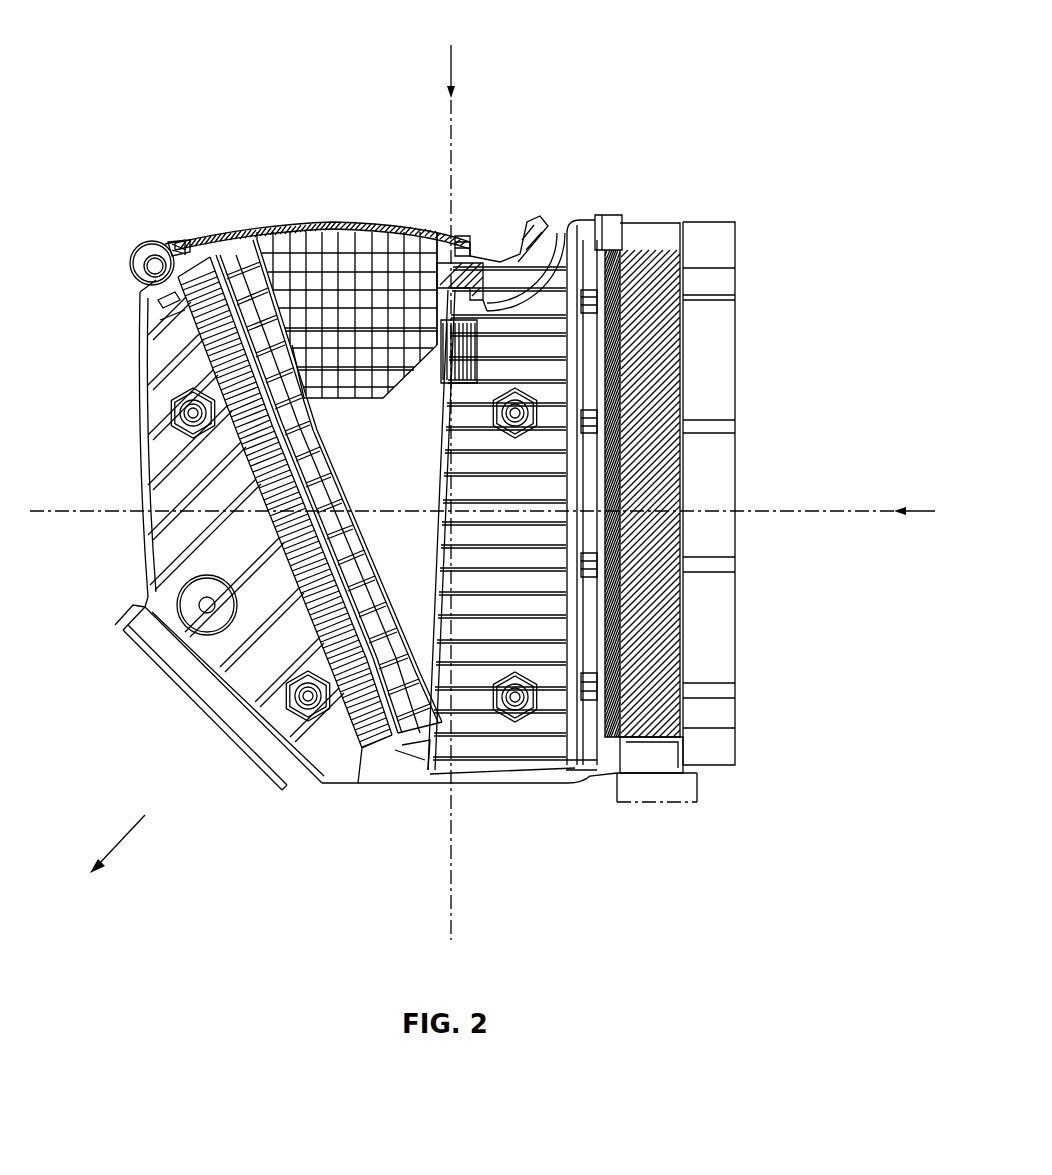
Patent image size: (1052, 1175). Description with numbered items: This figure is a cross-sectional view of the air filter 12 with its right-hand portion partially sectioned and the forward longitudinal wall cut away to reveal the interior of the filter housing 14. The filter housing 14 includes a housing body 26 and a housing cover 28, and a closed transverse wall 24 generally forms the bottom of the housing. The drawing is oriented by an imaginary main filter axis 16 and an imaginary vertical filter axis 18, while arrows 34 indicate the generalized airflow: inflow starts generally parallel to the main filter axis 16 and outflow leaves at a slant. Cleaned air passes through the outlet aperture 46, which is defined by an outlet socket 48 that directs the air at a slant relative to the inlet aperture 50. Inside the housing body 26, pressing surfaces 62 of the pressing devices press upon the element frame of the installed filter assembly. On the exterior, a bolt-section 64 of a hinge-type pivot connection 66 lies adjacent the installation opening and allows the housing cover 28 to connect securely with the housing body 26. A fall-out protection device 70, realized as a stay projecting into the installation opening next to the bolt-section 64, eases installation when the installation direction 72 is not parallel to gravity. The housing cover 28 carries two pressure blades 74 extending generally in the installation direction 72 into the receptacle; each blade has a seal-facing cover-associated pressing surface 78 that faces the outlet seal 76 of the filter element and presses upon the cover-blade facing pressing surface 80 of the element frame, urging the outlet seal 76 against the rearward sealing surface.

The air filter 12 is at (110, 42).
The filter housing 14 is at (329, 798).
The main filter axis 16 is at (845, 516).
The vertical filter axis 18 is at (455, 918).
The transverse wall 24 is at (465, 792).
The housing body 26 is at (529, 798).
The housing cover 28 is at (306, 210).
The arrows 34 is at (916, 508).
The outlet aperture 46 is at (162, 683).
The outlet socket 48 is at (133, 614).
The inlet aperture 50 is at (740, 392).
The pressing surface 62 is at (382, 762).
The bolt-section 64 is at (140, 255).
The hinge-type pivot connection 66 is at (135, 270).
The fall-out protection device 70 is at (170, 238).
The installation direction 72 is at (456, 54).
The pressure blades 74 is at (365, 228).
The outlet seal 76 is at (210, 343).
The seal-facing cover-associated pressing surface 78 is at (290, 228).
The cover-blade facing pressing surface 80 is at (258, 230).